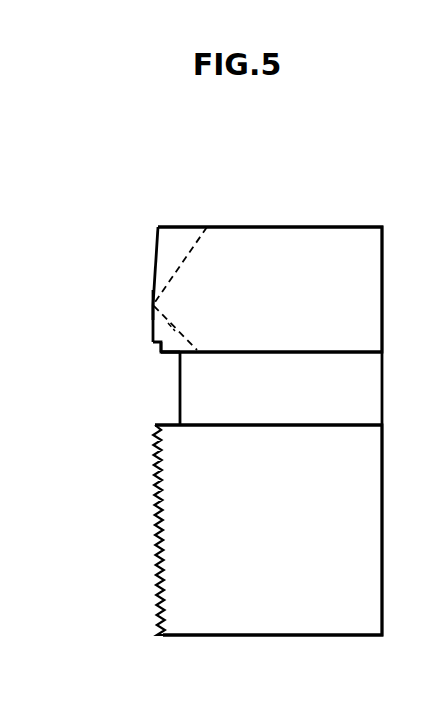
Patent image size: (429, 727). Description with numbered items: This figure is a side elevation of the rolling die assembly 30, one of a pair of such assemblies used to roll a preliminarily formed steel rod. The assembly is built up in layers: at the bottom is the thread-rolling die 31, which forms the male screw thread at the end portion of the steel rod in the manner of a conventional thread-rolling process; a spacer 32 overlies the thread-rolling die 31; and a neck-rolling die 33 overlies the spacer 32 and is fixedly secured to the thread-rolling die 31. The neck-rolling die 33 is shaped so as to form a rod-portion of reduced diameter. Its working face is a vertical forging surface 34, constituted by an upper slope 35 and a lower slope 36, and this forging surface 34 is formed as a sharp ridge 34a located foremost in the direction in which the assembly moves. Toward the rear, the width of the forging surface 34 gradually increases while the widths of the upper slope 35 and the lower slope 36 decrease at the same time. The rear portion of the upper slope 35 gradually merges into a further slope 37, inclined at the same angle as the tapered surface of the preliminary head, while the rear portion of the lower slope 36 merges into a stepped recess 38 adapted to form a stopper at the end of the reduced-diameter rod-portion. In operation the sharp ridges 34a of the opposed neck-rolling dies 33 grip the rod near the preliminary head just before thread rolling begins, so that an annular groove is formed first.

The rolling die assembly 30 is at (288, 223).
The thread-rolling die 31 is at (370, 528).
The spacer 32 is at (370, 389).
The neck-rolling die 33 is at (365, 284).
The vertical forging surface 34 is at (154, 286).
The sharp ridge 34a is at (153, 305).
The upper slope 35 is at (188, 252).
The lower slope 36 is at (165, 326).
The further slope 37 is at (157, 240).
The stepped recess 38 is at (160, 353).